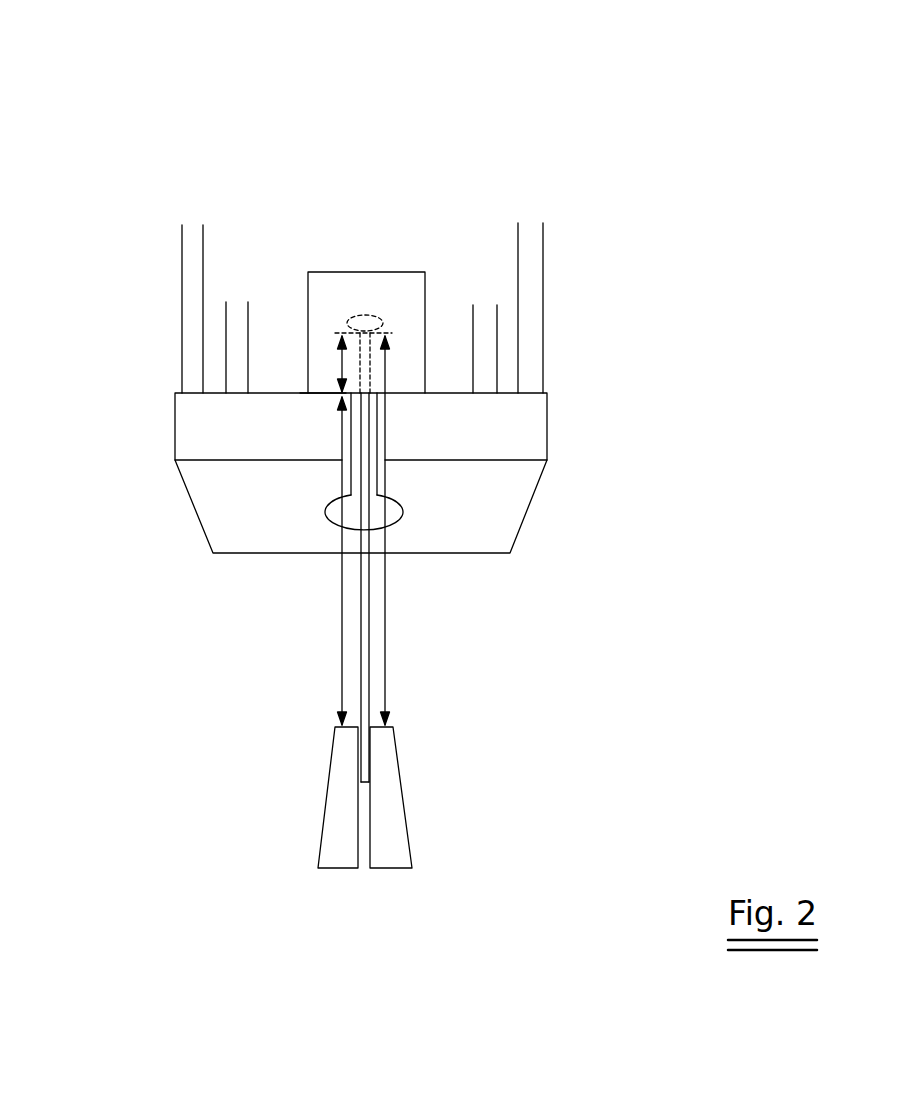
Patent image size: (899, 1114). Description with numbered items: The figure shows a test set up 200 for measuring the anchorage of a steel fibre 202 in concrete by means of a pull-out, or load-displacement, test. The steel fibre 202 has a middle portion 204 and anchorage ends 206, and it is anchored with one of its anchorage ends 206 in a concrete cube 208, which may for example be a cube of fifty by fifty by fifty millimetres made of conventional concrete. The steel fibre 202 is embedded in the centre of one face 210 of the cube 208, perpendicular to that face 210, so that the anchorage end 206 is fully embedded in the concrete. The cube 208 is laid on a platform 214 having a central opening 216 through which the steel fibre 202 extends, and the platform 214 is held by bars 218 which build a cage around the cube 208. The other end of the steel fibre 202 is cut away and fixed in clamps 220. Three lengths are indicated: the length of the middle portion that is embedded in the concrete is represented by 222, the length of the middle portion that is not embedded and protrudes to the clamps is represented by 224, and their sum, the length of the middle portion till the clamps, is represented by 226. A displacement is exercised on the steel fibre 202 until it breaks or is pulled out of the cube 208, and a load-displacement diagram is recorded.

The test set up 200 is at (215, 153).
The steel fibre 202 is at (365, 693).
The middle portion 204 is at (365, 622).
The anchorage end 206 is at (497, 314).
The concrete cube 208 is at (430, 267).
The face 210 is at (192, 445).
The platform 214 is at (520, 428).
The central opening 216 is at (372, 471).
The bars 218 is at (237, 330).
The clamps 220 is at (342, 808).
The length of the middle portion embedded 222 is at (198, 381).
The length of the middle portion protruding to the clamps 224 is at (342, 595).
The length of the middle portion till the clamps 226 is at (386, 572).